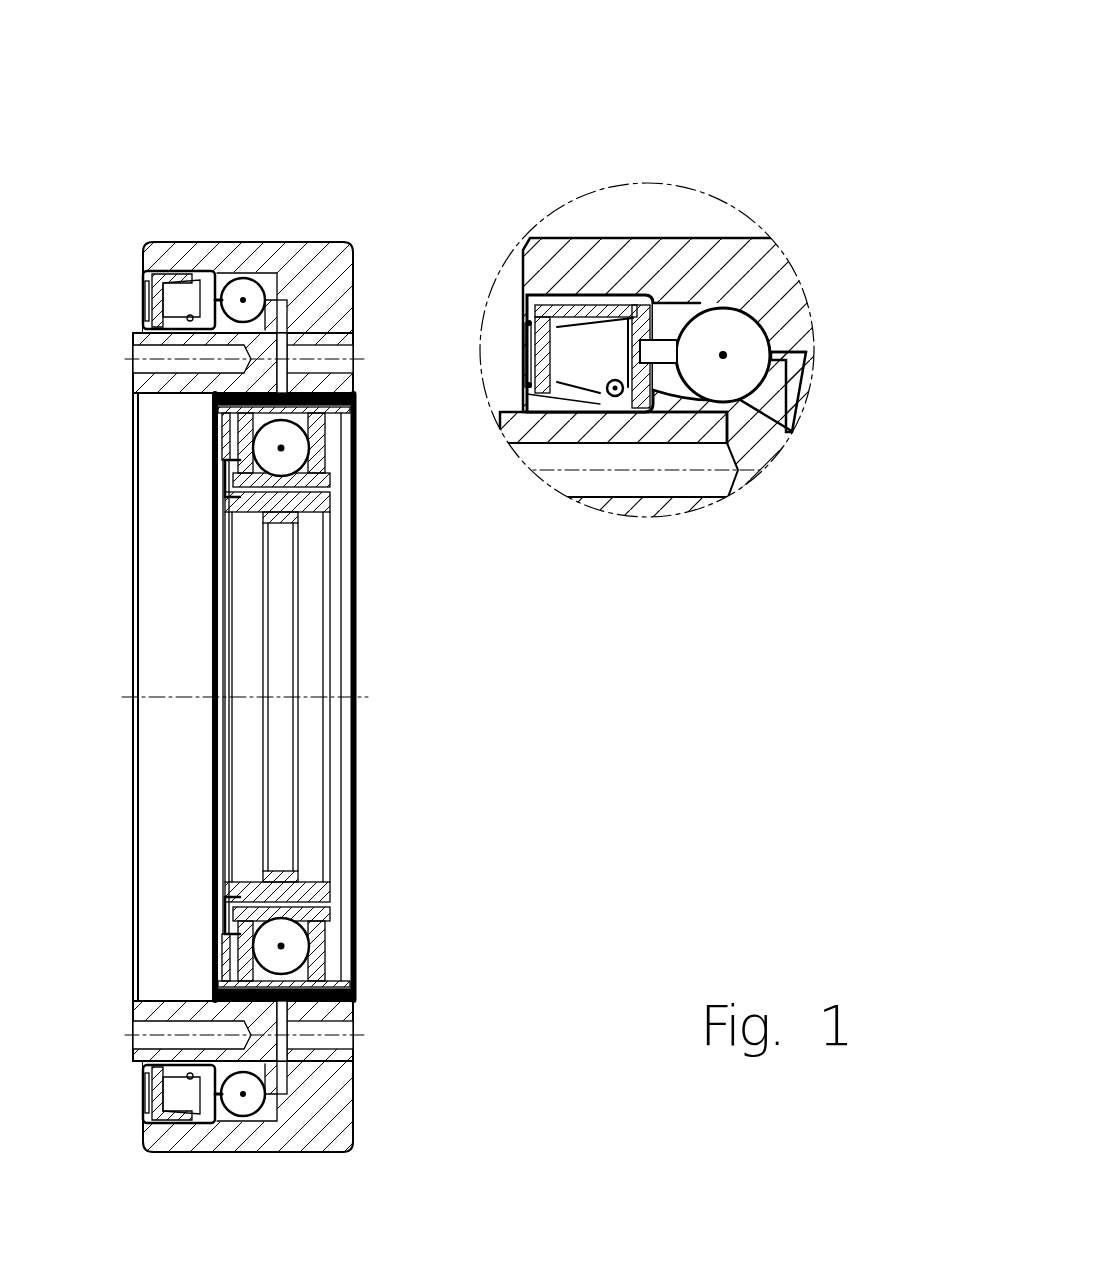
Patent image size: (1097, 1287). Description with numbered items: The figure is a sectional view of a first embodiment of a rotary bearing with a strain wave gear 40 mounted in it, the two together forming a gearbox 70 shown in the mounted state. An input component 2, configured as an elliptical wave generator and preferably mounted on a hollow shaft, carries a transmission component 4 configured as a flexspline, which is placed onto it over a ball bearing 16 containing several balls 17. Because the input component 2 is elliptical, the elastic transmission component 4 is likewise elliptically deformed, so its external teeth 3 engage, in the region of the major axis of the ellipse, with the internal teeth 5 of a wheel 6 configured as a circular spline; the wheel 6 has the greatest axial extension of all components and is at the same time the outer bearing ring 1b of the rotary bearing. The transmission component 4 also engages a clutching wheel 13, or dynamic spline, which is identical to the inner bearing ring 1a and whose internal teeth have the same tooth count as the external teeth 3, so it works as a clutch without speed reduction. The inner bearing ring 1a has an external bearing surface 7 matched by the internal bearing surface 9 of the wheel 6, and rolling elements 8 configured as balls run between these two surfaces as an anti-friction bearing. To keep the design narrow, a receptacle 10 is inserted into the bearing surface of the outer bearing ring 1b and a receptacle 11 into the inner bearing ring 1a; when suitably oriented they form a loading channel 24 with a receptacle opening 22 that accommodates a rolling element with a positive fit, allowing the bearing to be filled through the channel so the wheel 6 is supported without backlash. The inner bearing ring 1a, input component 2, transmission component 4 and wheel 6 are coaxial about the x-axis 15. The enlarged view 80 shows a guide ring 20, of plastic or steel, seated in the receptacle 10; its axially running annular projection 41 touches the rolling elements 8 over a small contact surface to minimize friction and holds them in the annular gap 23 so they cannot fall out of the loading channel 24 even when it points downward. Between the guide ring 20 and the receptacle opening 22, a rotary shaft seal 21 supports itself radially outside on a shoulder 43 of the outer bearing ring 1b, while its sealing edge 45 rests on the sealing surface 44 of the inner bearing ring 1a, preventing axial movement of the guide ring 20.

The inner bearing ring 1a is at (190, 1075).
The outer bearing ring 1b is at (328, 1123).
The input component 2 is at (297, 527).
The external teeth 3 is at (352, 412).
The transmission component 4 is at (281, 448).
The internal teeth 5 is at (347, 390).
The wheel 6 is at (305, 272).
The bearing surface 7 is at (243, 1115).
The rolling elements 8 is at (243, 300).
The bearing surface 9 is at (265, 1100).
The receptacle 10 is at (140, 270).
The receptacle 11 is at (148, 334).
The clutching wheel 13 is at (172, 778).
The x-axis 15 is at (172, 697).
The ball bearing 16 is at (250, 422).
The balls 17 is at (283, 505).
The guide ring 20 is at (213, 297).
The rotary shaft seal 21 is at (622, 308).
The receptacle opening 22 is at (491, 342).
The annular gap 23 is at (738, 398).
The loading channel 24 is at (145, 300).
The strain wave gear 40 is at (612, 748).
The annular projection 41 is at (668, 348).
The shoulder 43 is at (611, 261).
The sealing surface 44 is at (663, 422).
The sealing edge 45 is at (598, 398).
The gearbox 70 is at (180, 85).
The enlarged view 80 is at (968, 281).